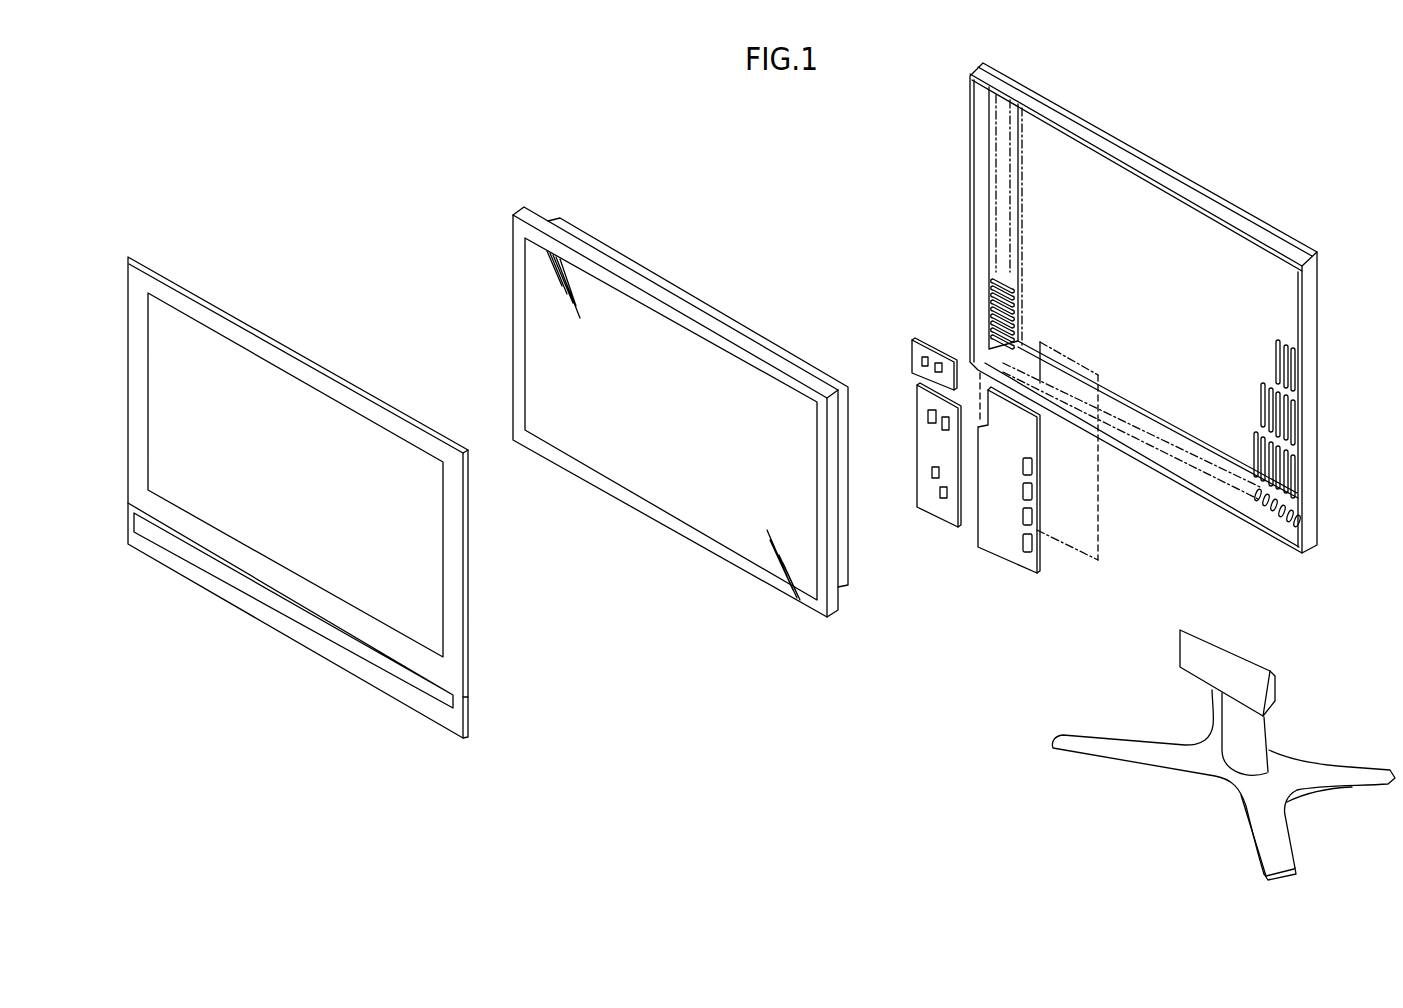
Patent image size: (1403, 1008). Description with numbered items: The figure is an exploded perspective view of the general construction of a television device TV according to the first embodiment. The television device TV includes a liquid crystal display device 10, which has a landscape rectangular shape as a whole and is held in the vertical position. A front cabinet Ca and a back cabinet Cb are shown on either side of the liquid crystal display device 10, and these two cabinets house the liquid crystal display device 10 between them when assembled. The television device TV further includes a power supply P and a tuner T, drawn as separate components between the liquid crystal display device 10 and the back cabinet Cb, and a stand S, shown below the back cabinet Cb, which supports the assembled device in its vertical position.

The television device TV is at (703, 140).
The front cabinet Ca is at (279, 341).
The liquid crystal display device 10 is at (626, 262).
The back cabinet Cb is at (1135, 155).
The tuner T is at (930, 517).
The power supply P is at (1000, 553).
The stand S is at (1130, 768).